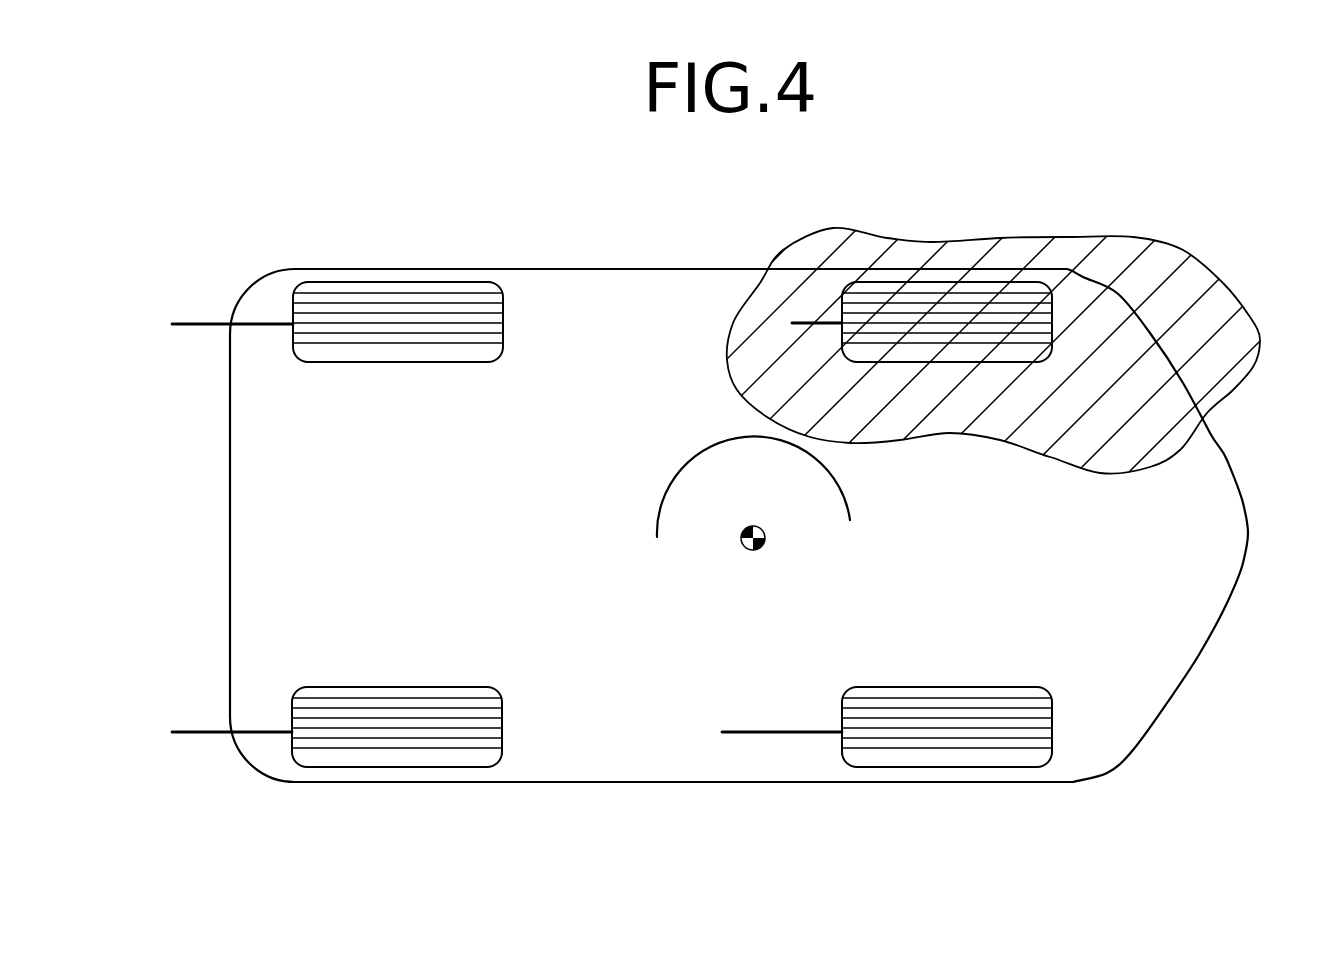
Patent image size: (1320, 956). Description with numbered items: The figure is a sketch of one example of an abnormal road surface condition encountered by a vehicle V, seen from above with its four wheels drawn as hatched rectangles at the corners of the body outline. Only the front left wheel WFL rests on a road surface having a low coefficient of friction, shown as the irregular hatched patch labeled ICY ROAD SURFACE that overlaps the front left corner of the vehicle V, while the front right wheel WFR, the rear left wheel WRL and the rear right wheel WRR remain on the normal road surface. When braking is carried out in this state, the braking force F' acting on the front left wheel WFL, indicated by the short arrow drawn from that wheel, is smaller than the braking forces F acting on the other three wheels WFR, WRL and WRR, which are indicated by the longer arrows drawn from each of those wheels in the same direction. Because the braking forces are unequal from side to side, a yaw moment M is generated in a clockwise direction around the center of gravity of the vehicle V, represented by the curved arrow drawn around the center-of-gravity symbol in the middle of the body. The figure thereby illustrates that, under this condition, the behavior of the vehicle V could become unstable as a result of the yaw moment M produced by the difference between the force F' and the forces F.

The vehicle V is at (607, 265).
The rear left wheel WRL is at (413, 350).
The front left wheel WFL is at (997, 343).
The rear right wheel WRR is at (420, 697).
The front right wheel WFR is at (968, 693).
The braking force F is at (507, 550).
The braking force on front left wheel F' is at (814, 350).
The yaw moment M is at (782, 496).
The icy road surface ICY ROAD SURFACE is at (1050, 190).